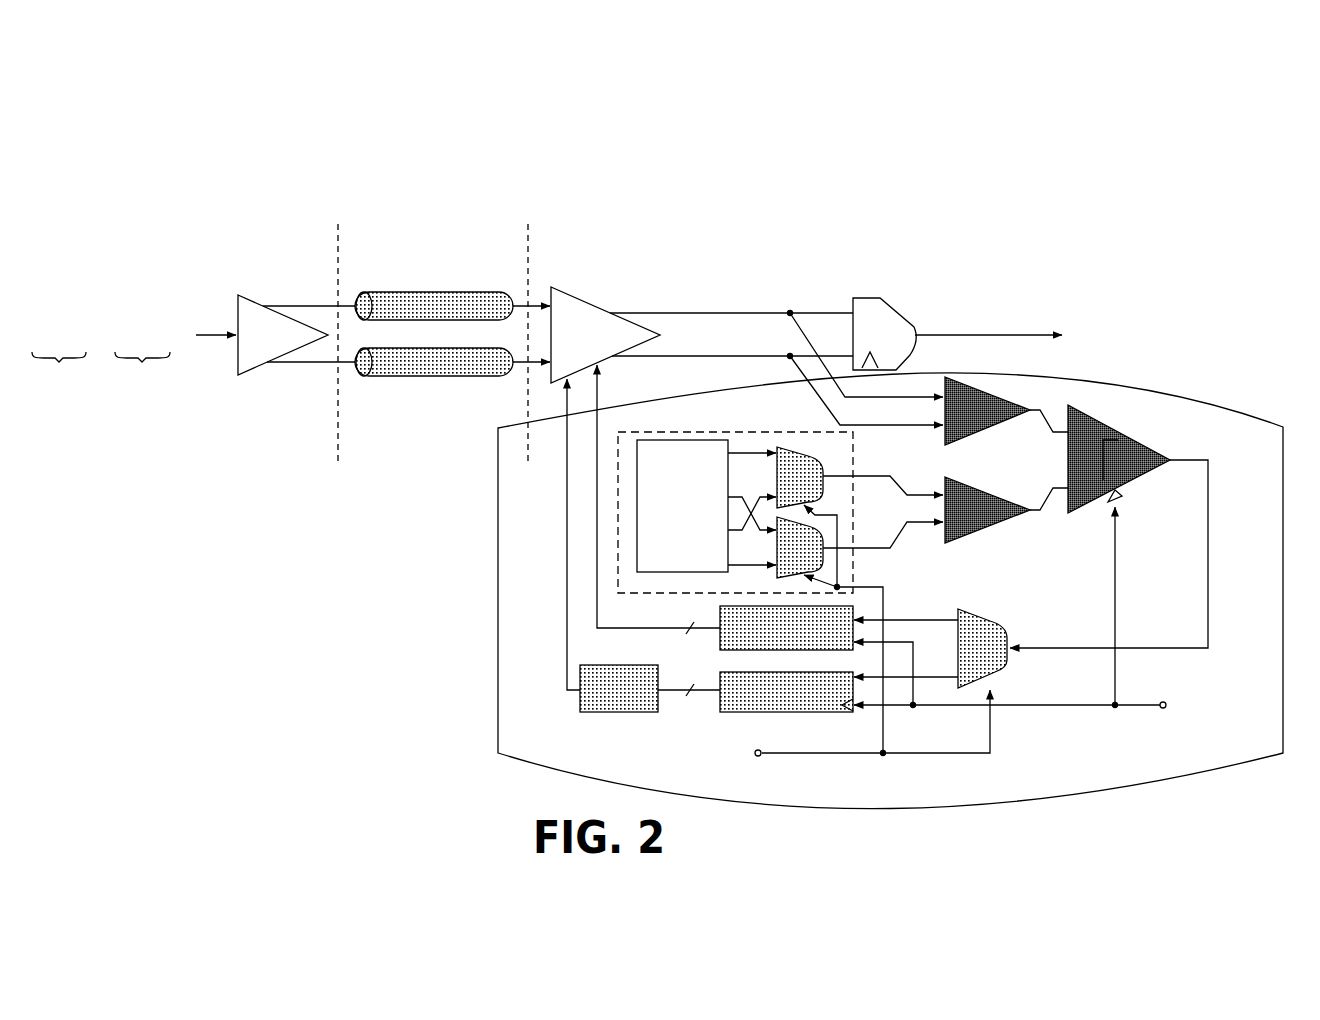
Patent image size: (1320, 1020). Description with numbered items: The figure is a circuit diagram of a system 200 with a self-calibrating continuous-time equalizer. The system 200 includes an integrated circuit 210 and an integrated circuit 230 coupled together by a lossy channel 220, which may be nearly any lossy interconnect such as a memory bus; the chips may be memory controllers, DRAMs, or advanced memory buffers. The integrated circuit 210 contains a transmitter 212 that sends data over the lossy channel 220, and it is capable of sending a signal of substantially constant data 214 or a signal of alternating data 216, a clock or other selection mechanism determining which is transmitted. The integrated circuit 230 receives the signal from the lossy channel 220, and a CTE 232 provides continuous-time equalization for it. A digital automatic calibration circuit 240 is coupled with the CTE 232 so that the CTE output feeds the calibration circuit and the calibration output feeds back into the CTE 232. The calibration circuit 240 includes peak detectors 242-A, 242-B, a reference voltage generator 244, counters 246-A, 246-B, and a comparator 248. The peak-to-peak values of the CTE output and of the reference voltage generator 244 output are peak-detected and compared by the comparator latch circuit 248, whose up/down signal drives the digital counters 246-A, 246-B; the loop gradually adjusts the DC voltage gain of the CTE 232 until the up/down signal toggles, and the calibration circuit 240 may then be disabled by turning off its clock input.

The system 200 is at (423, 692).
The integrated circuit 210 is at (174, 344).
The transmitter 212 is at (238, 297).
The constant data 214 is at (48, 400).
The alternating data 216 is at (140, 400).
The lossy channel 220 is at (433, 277).
The integrated circuit 230 is at (751, 337).
The continuous-time equalizer 232 is at (572, 290).
The digital automatic calibration circuit 240 is at (1253, 418).
The peak detector 242-A is at (998, 423).
The peak detector 242-B is at (1003, 520).
The reference voltage generator 244 is at (622, 505).
The counter 246-A is at (855, 606).
The counter 246-B is at (723, 717).
The comparator 248 is at (1153, 470).